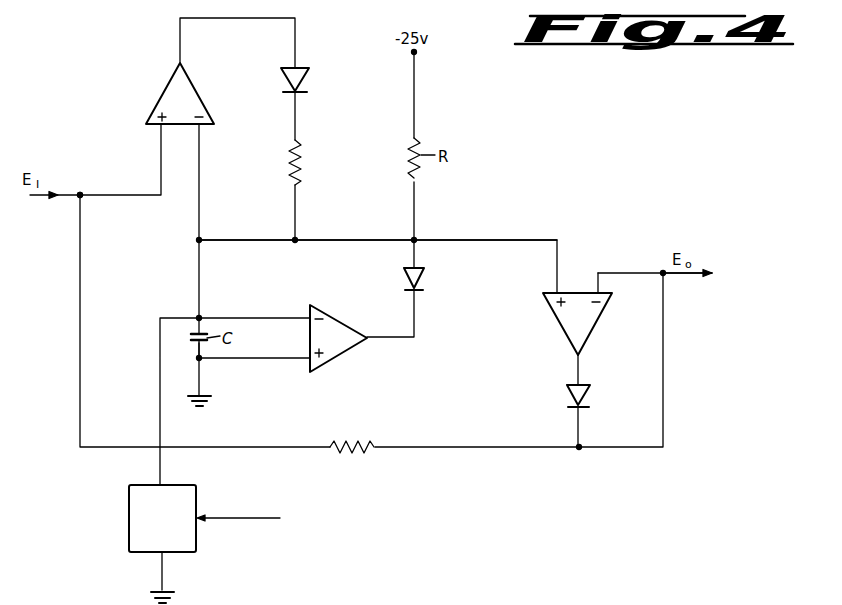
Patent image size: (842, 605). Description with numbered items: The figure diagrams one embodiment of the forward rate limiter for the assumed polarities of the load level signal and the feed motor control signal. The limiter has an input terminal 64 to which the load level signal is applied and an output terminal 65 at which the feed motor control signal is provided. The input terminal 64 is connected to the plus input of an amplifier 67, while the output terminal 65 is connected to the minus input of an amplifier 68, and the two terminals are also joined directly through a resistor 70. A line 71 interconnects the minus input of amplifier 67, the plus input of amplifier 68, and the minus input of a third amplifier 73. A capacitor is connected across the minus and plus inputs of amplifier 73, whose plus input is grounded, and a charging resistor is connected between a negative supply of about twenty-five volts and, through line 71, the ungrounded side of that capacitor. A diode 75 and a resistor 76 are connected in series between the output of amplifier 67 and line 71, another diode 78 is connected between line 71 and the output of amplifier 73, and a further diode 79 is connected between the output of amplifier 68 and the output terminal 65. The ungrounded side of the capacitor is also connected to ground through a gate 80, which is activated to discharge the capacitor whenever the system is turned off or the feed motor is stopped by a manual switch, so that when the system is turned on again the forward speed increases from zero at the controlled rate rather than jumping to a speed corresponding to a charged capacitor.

The input terminal 64 is at (78, 197).
The output terminal 65 is at (661, 272).
The amplifier 67 is at (160, 108).
The amplifier 68 is at (592, 333).
The resistor 70 is at (375, 450).
The line 71 is at (322, 243).
The amplifier 73 is at (338, 362).
The diode 75 is at (305, 78).
The resistor 76 is at (302, 160).
The diode 78 is at (425, 278).
The diode 79 is at (590, 393).
The gate 80 is at (129, 528).